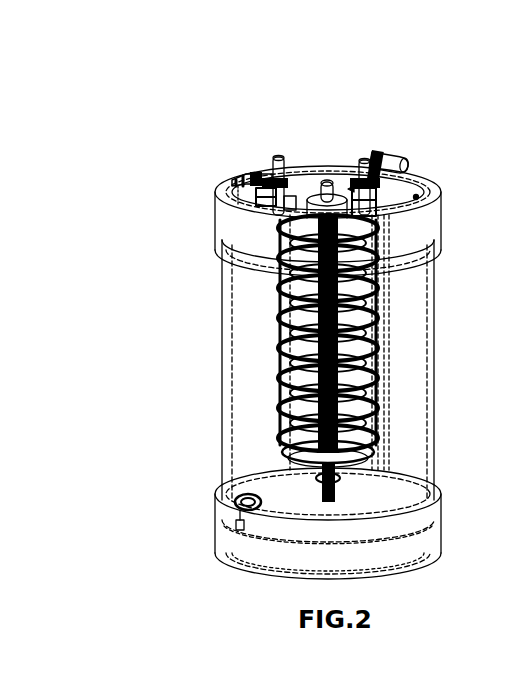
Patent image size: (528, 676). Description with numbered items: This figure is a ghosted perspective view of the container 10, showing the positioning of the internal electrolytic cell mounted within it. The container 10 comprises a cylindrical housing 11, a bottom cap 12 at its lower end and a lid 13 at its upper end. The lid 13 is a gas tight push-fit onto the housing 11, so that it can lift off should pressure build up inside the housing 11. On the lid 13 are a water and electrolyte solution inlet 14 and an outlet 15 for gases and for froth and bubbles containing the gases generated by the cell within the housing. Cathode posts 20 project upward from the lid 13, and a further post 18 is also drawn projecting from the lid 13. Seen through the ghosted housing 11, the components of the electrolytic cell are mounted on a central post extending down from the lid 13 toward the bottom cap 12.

The container 10 is at (197, 389).
The cylindrical housing 11 is at (436, 415).
The bottom cap 12 is at (440, 526).
The lid 13 is at (418, 193).
The water and electrolyte solution inlet 14 is at (398, 153).
The outlet 15 is at (246, 174).
The post / electrode 18 is at (363, 157).
The cathode posts 20 is at (276, 157).